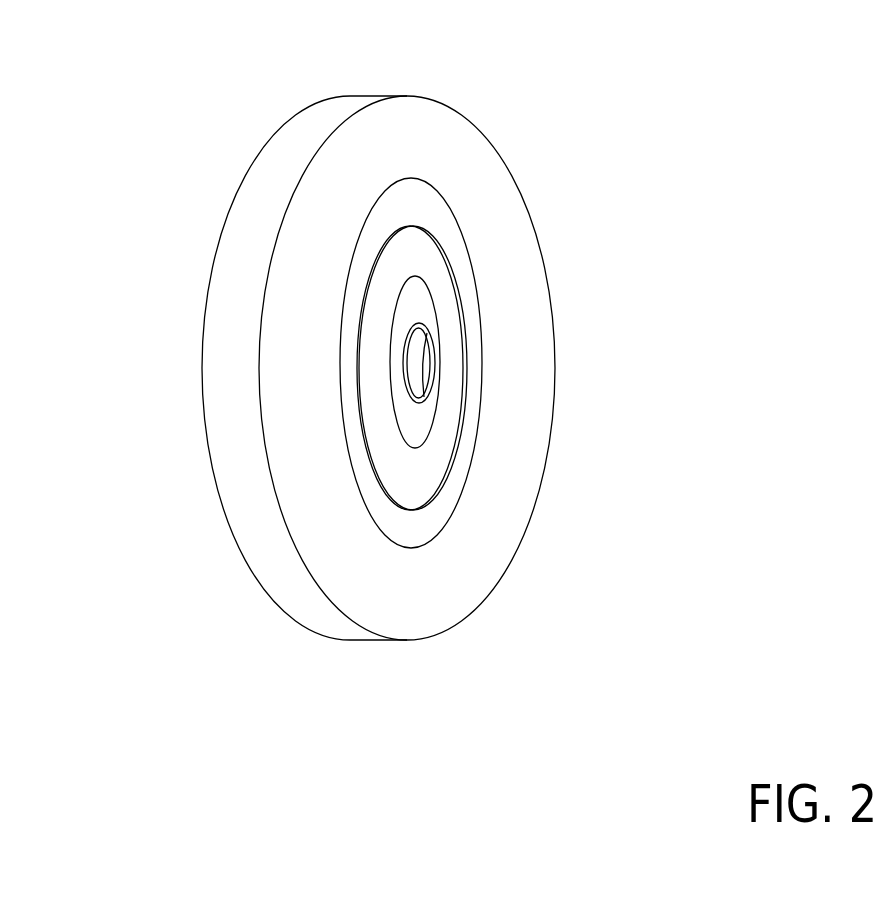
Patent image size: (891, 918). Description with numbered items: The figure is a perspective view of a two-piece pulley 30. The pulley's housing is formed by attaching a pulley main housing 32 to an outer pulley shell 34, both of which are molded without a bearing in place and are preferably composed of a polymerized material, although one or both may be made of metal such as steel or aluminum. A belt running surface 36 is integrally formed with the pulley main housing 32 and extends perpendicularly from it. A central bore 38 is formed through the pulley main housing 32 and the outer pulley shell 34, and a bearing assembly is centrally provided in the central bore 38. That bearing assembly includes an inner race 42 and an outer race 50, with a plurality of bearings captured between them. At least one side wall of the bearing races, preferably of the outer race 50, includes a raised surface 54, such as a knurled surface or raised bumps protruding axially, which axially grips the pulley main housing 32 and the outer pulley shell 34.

The two-piece pulley 30 is at (606, 56).
The pulley main housing 32 is at (216, 361).
The outer pulley shell 34 is at (527, 257).
The belt running surface 36 is at (298, 607).
The central bore 38 is at (418, 377).
The inner race 42 is at (417, 327).
The outer race 50 is at (430, 353).
The raised surface 54 is at (420, 433).